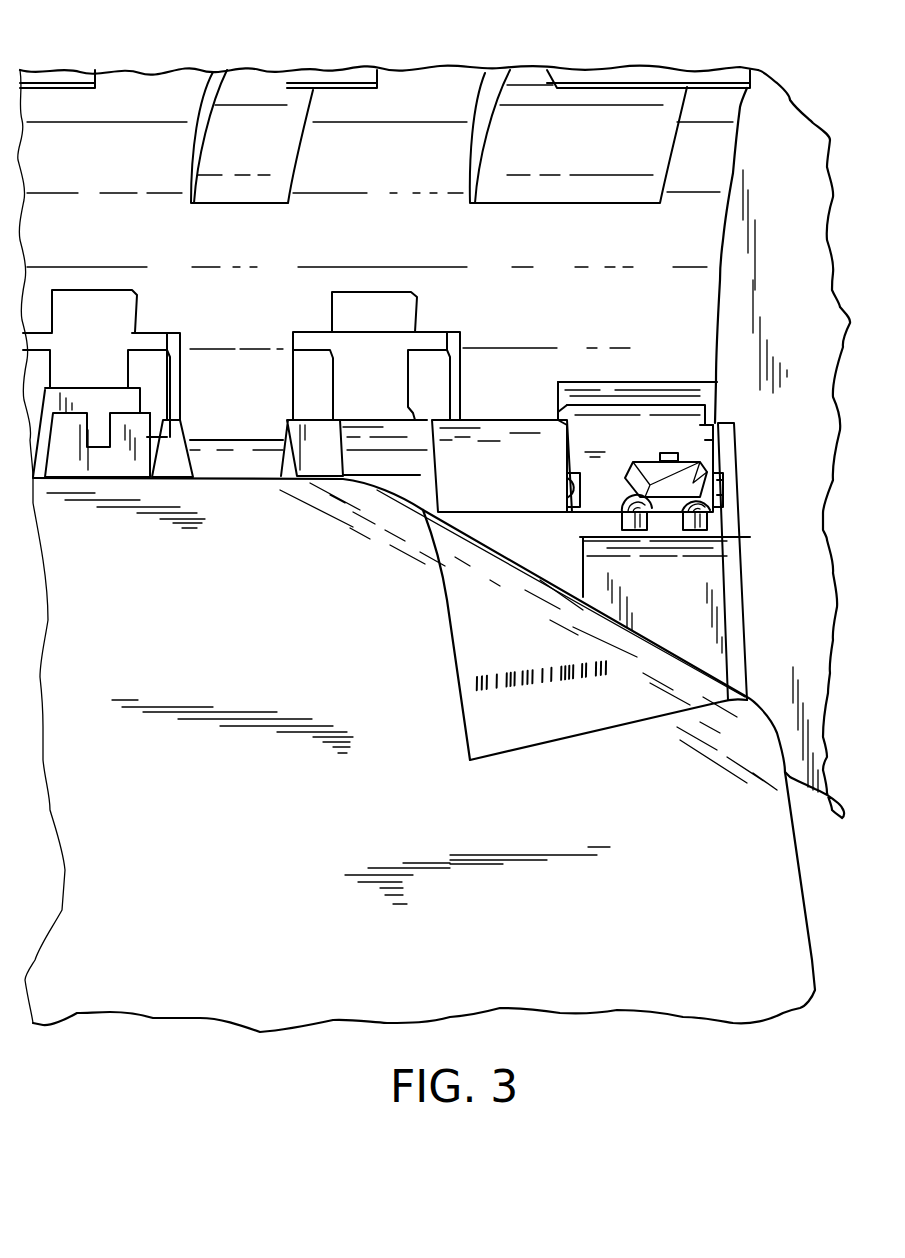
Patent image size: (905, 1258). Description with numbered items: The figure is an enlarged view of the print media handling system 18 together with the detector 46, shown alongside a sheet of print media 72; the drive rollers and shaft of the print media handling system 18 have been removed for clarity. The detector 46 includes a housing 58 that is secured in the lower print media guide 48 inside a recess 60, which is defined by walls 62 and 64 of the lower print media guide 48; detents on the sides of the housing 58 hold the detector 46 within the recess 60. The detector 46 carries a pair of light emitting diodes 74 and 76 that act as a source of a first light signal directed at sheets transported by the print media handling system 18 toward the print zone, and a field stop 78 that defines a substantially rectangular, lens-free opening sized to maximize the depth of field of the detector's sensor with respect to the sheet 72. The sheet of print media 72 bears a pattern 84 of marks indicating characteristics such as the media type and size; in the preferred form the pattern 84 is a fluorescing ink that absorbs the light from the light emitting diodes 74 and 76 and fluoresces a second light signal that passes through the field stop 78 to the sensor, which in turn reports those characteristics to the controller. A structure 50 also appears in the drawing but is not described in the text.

The print media handling system 18 is at (724, 315).
The support rail 50 is at (417, 95).
The lower print media guide 48 is at (500, 452).
The housing 58 is at (670, 430).
The field stop 78 is at (665, 453).
The detector 46 is at (708, 448).
The light emitting diode 74 is at (687, 493).
The light emitting diode 76 is at (633, 500).
The recess 60 is at (717, 493).
The wall 62 is at (567, 480).
The wall 64 is at (748, 518).
The sheet of print media 72 is at (740, 887).
The pattern 84 is at (530, 690).